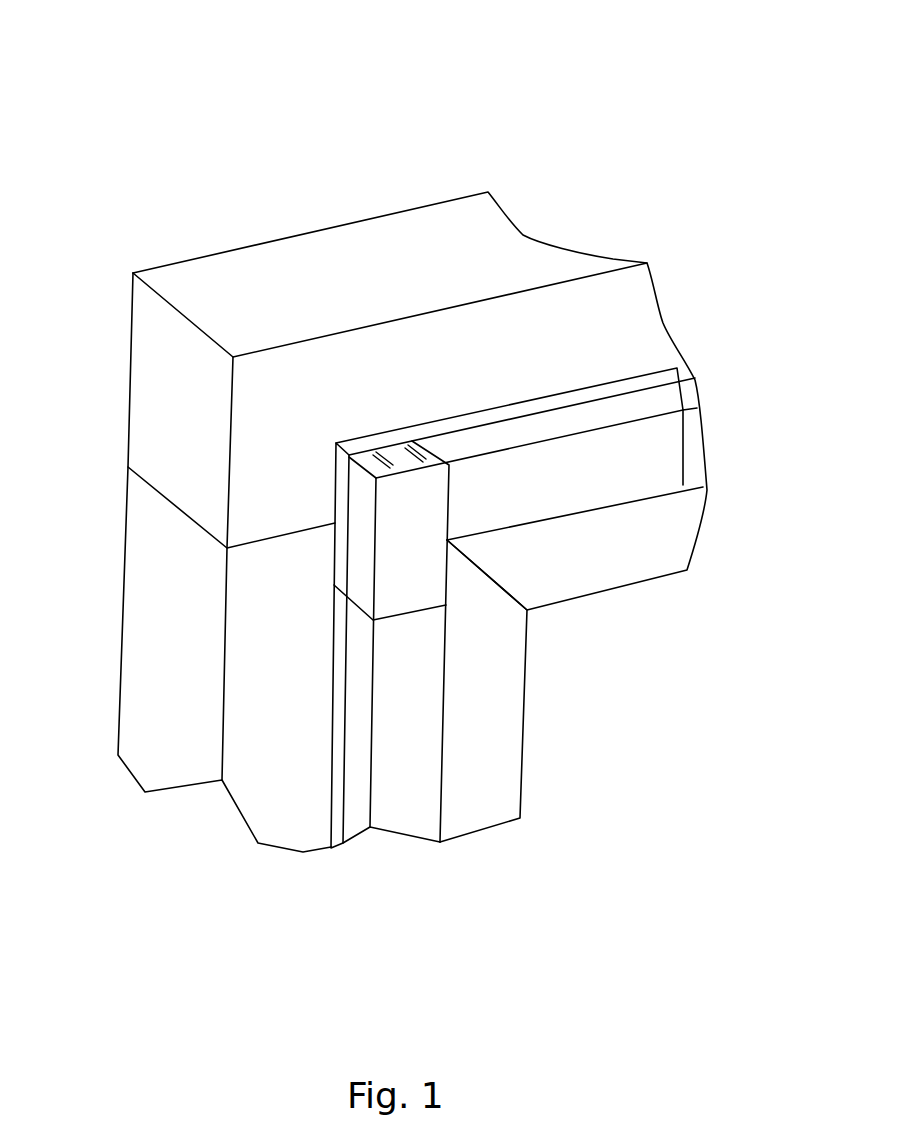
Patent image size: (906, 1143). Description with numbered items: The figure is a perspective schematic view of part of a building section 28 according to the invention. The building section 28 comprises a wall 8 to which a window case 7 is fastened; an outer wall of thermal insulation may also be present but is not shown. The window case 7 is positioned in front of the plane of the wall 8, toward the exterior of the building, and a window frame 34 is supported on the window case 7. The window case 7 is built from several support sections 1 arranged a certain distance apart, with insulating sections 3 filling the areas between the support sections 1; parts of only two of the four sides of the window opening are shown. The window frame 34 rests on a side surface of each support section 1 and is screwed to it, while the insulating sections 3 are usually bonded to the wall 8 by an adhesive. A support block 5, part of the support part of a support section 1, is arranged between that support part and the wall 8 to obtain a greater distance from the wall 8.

The support section 1 is at (690, 443).
The insulating section 3 is at (612, 443).
The support block 5 is at (333, 745).
The window case 7 is at (533, 463).
The wall 8 is at (377, 253).
The building section 28 is at (140, 108).
The window frame 34 is at (498, 780).